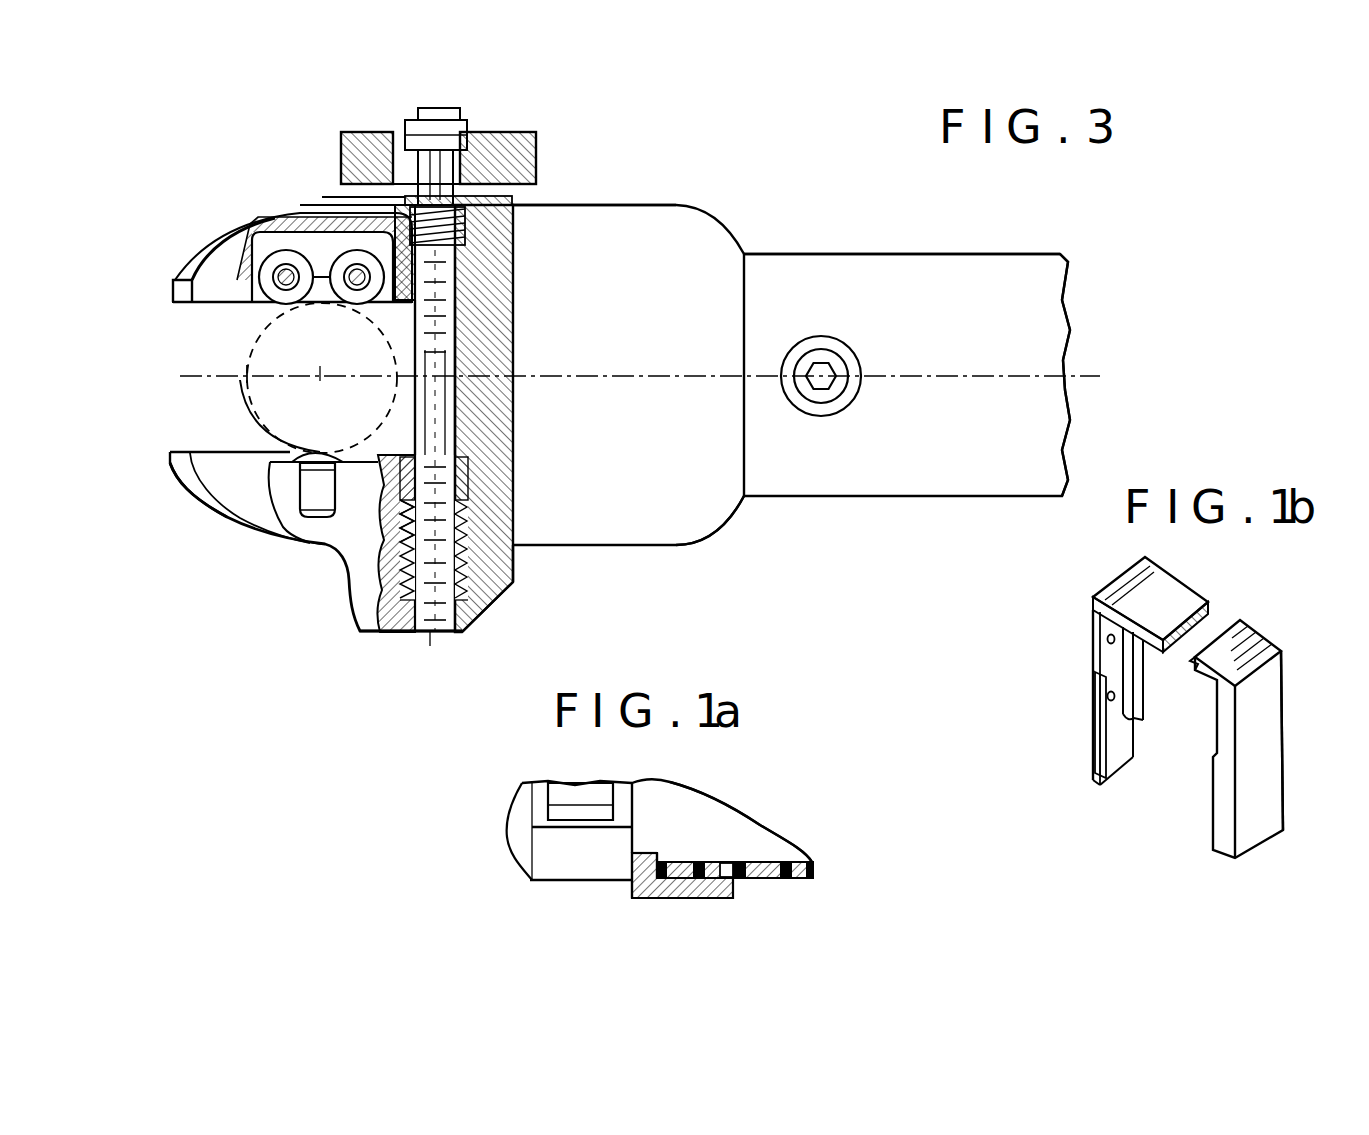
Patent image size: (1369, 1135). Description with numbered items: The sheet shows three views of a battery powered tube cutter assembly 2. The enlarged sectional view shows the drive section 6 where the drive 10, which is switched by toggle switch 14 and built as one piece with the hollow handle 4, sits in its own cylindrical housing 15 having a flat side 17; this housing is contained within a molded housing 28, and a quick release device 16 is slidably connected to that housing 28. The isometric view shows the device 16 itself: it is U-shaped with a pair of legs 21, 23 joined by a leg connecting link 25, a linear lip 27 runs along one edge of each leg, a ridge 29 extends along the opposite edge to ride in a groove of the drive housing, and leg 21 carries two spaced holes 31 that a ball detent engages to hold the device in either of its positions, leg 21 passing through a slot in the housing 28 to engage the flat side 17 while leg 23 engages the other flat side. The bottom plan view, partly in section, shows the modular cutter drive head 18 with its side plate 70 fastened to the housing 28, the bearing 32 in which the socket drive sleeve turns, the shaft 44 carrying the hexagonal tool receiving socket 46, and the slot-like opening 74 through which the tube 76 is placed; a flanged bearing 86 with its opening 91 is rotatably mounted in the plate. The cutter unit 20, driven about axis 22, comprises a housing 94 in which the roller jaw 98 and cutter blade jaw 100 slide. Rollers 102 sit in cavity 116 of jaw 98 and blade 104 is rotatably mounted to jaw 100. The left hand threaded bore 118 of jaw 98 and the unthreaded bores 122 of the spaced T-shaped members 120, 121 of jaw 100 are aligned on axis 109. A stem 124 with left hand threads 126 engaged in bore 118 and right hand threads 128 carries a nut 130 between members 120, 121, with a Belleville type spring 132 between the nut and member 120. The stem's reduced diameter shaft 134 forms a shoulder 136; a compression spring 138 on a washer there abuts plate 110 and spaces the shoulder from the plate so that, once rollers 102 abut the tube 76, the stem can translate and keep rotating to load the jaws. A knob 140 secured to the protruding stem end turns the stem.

In FIG. 3, the cutter assembly 2 is at (955, 242).
In FIG. 3, the drive section 6 is at (903, 507).
In FIG. 3, the cutter drive head 18 is at (710, 537).
In FIG. 3, the cutter unit 20 is at (352, 648).
In FIG. 3, the axis 22 is at (320, 377).
In FIG. 3, the housing 28 is at (1034, 471).
In FIG. 1A, the housing 28 is at (800, 882).
In FIG. 3, the bearing 32 is at (805, 407).
In FIG. 3, the shaft 44 is at (837, 385).
In FIG. 3, the hexagonal tool receiving socket 46 is at (821, 369).
In FIG. 3, the side plate 70 is at (708, 269).
In FIG. 3, the slot-like opening 74 is at (222, 305).
In FIG. 3, the tube 76 is at (243, 380).
In FIG. 3, the flanged bearing 86 is at (217, 267).
In FIG. 3, the opening 91 is at (170, 450).
In FIG. 3, the housing 94 is at (502, 233).
In FIG. 3, the roller jaw 98 is at (177, 280).
In FIG. 3, the cutter blade jaw 100 is at (360, 563).
In FIG. 3, the rollers 102 is at (267, 327).
In FIG. 3, the blade 104 is at (473, 120).
In FIG. 3, the axis 109 is at (433, 418).
In FIG. 3, the plate 110 is at (530, 200).
In FIG. 3, the cavity 116 is at (310, 240).
In FIG. 3, the left hand threaded bore 118 is at (452, 287).
In FIG. 3, the T-shaped member 120 is at (378, 505).
In FIG. 3, the T-shaped member 121 is at (347, 622).
In FIG. 3, the unthreaded bores 122 is at (442, 472).
In FIG. 3, the stem 124 is at (463, 357).
In FIG. 3, the left hand threads 126 is at (457, 365).
In FIG. 3, the right hand threads 128 is at (452, 515).
In FIG. 3, the nut 130 is at (479, 600).
In FIG. 3, the Belleville type spring 132 is at (510, 553).
In FIG. 3, the reduced diameter shaft 134 is at (443, 193).
In FIG. 3, the shoulder 136 is at (387, 317).
In FIG. 3, the compression spring 138 is at (343, 193).
In FIG. 3, the knob 140 is at (363, 133).
In FIG. 1A, the handle 4 is at (560, 883).
In FIG. 1A, the drive 10 is at (770, 820).
In FIG. 1A, the toggle switch 14 is at (578, 793).
In FIG. 1A, the housing 15 is at (702, 812).
In FIG. 1A, the quick release device 16 is at (660, 902).
In FIG. 1B, the quick release device 16 is at (1287, 782).
In FIG. 1A, the flat side 17 is at (660, 857).
In FIG. 1A, the leg 21 is at (643, 860).
In FIG. 1B, the leg 21 is at (1088, 750).
In FIG. 1B, the leg 23 is at (1278, 747).
In FIG. 1B, the leg connecting link 25 is at (1243, 650).
In FIG. 1A, the linear lip 27 is at (630, 870).
In FIG. 1B, the linear lip 27 is at (1215, 810).
In FIG. 1A, the ridge 29 is at (737, 883).
In FIG. 1B, the ridge 29 is at (1140, 690).
In FIG. 1B, the holes 31 is at (1107, 639).